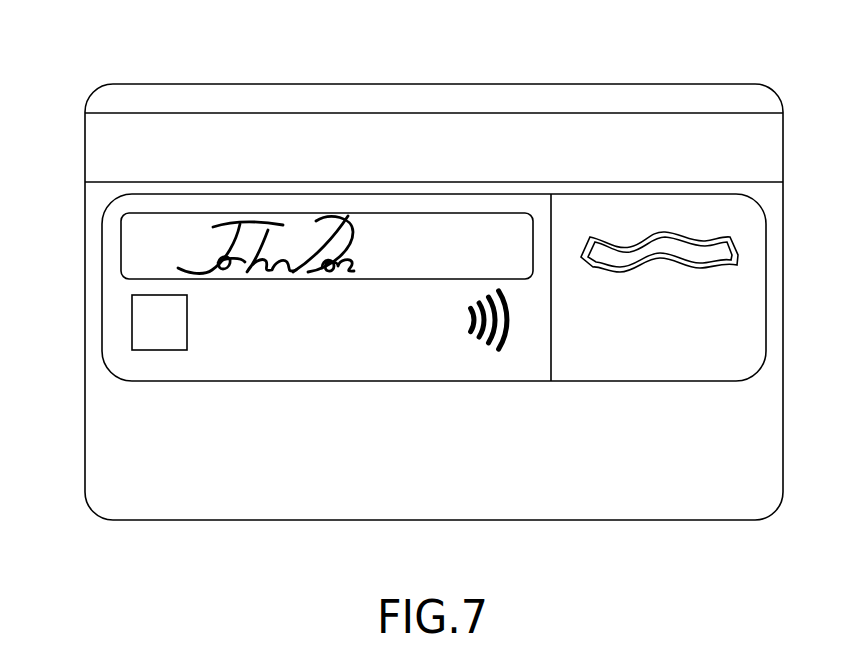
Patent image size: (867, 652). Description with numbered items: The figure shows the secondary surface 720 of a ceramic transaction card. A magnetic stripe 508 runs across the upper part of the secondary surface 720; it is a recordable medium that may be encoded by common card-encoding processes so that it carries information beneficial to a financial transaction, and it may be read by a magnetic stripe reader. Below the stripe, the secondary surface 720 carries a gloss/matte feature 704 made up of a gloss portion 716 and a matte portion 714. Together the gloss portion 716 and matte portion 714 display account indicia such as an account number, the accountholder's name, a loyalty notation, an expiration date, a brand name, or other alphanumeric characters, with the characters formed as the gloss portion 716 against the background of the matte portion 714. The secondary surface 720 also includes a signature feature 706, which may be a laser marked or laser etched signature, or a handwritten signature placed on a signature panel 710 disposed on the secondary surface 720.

The magnetic stripe 508 is at (110, 148).
The gloss/matte feature 704 is at (685, 382).
The signature feature 706 is at (328, 215).
The signature panel 710 is at (417, 213).
The matte portion 714 is at (697, 245).
The gloss portion 716 is at (723, 287).
The secondary surface 720 is at (627, 443).